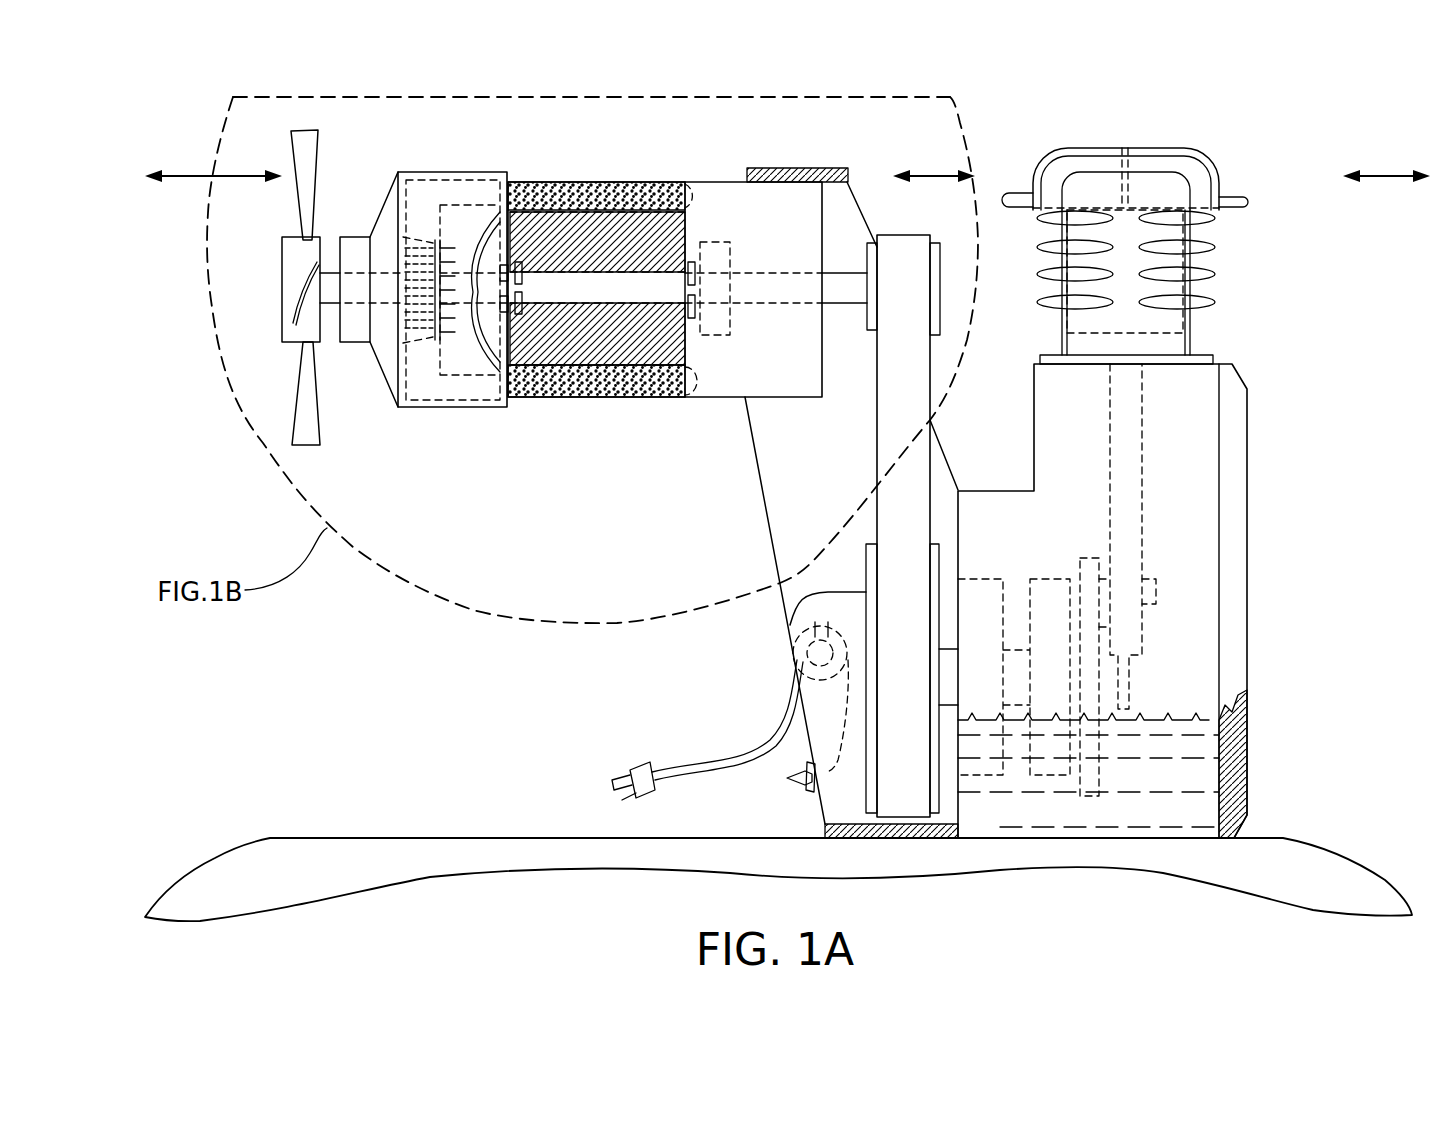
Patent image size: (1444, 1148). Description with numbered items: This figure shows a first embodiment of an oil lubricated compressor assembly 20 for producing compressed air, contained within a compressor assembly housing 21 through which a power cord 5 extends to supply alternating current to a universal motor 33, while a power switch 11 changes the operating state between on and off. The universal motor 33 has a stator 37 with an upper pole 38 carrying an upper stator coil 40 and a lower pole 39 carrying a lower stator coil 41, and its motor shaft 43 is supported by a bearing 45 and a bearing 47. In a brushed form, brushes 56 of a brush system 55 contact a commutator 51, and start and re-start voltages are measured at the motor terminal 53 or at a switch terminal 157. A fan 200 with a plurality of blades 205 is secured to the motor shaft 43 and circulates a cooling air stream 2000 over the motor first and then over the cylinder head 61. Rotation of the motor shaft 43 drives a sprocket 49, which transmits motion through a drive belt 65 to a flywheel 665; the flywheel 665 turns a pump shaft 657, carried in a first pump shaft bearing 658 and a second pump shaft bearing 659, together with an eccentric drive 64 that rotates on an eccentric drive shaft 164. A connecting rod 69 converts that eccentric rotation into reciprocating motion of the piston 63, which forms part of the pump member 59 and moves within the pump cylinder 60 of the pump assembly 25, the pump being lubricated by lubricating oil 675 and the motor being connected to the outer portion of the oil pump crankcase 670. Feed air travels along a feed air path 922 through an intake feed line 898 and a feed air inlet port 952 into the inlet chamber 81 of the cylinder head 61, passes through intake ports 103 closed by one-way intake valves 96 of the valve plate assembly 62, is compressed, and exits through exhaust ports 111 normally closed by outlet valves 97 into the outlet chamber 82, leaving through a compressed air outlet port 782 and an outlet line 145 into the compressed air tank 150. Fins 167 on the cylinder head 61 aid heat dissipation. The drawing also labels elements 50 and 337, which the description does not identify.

The power cord 5 is at (672, 756).
The power switch 11 is at (790, 776).
The compressor assembly 20 is at (455, 630).
The compressor assembly housing 21 is at (440, 407).
The pump assembly 25 is at (1280, 184).
The universal motor 33 is at (596, 192).
The stator 37 is at (627, 183).
The upper pole 38 is at (550, 182).
The lower pole 39 is at (560, 397).
The upper stator coil 40 is at (478, 226).
The lower stator coil 41 is at (504, 382).
The motor shaft 43 is at (640, 294).
The bearing 45 is at (352, 236).
The bearing 47 is at (730, 330).
The sprocket 49 is at (870, 331).
The gear bell 50 is at (470, 230).
The commutator 51 is at (430, 247).
The motor terminal 53 is at (414, 347).
The brush system 55 is at (412, 370).
The brushes 56 is at (418, 245).
The pump member 59 is at (1176, 373).
The pump cylinder 60 is at (1222, 293).
The cylinder head 61 is at (1213, 167).
The valve plate assembly 62 is at (1220, 208).
The piston 63 is at (1168, 322).
The eccentric drive 64 is at (1201, 750).
The drive belt 65 is at (891, 443).
The connecting rod 69 is at (1131, 520).
The inlet chamber 81 is at (1100, 180).
The outlet chamber 82 is at (1155, 186).
The intake valves 96 is at (1040, 216).
The outlet valves 97 is at (1162, 210).
The intake ports 103 is at (1070, 206).
The exhaust ports 111 is at (1177, 203).
The outlet line 145 is at (1253, 202).
The compressed air tank 150 is at (215, 872).
The switch terminal 157 is at (820, 657).
The eccentric drive shaft 164 is at (1156, 621).
The fins 167 is at (1130, 172).
The fan 200 is at (287, 333).
The blades 205 is at (300, 152).
The bearing block 337 is at (670, 210).
The pump shaft 657 is at (1017, 691).
The first pump shaft bearing 658 is at (980, 742).
The second pump shaft bearing 659 is at (1053, 749).
The flywheel 665 is at (792, 625).
The oil pump crankcase 670 is at (1201, 579).
The lubricating oil 675 is at (1198, 806).
The compressed air outlet port 782 is at (1250, 213).
The intake feed line 898 is at (1005, 190).
The feed air path 922 is at (1000, 197).
The feed air inlet port 952 is at (1028, 217).
The cooling air stream 2000 is at (200, 178).